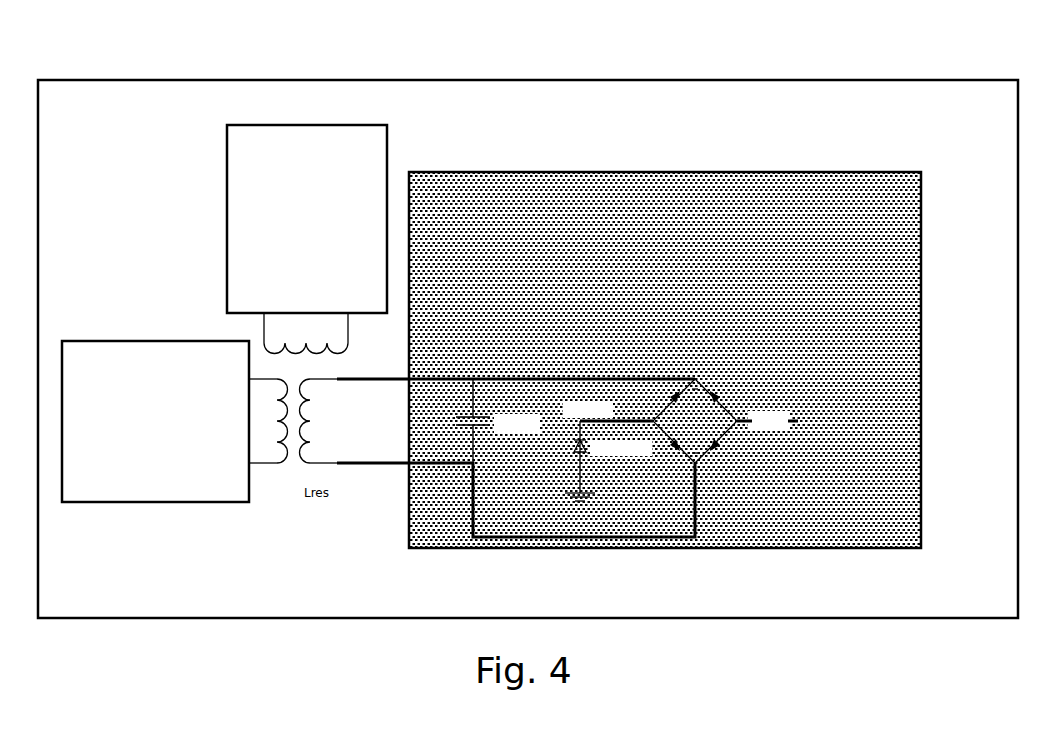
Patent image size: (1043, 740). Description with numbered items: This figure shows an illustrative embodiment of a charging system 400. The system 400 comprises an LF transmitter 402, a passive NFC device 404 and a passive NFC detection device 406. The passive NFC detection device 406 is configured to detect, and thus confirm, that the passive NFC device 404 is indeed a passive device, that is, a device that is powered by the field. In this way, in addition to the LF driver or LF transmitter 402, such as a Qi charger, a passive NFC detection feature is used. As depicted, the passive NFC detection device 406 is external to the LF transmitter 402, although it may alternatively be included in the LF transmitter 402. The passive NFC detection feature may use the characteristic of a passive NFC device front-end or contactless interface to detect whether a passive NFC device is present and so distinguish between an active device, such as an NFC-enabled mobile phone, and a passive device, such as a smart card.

The charging system 400 is at (150, 80).
The LF transmitter 402 is at (111, 466).
The passive NFC device 404 is at (465, 205).
The passive NFC detection device 406 is at (347, 154).